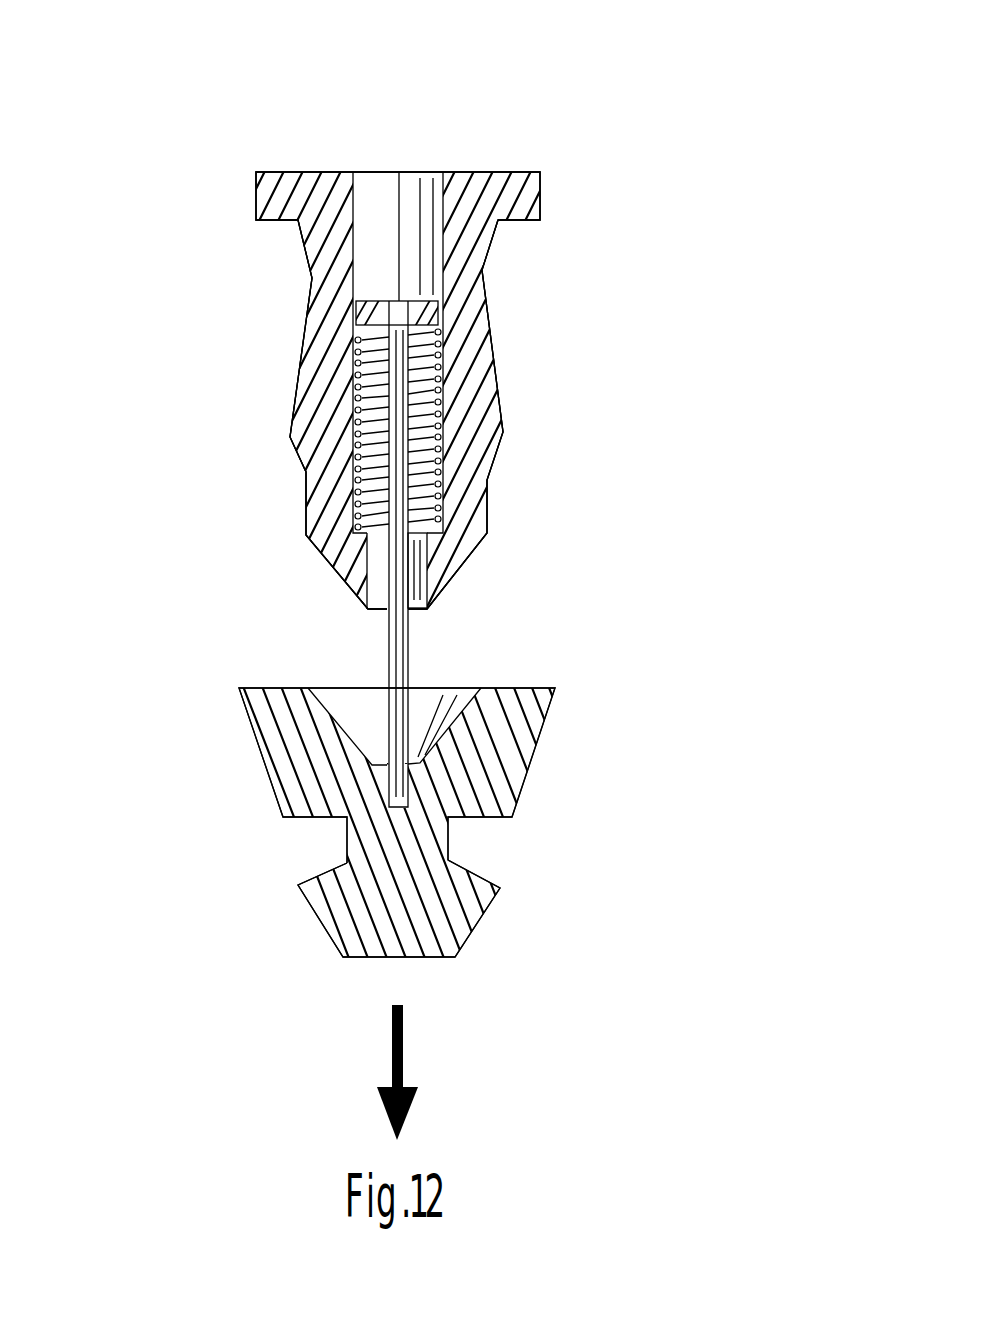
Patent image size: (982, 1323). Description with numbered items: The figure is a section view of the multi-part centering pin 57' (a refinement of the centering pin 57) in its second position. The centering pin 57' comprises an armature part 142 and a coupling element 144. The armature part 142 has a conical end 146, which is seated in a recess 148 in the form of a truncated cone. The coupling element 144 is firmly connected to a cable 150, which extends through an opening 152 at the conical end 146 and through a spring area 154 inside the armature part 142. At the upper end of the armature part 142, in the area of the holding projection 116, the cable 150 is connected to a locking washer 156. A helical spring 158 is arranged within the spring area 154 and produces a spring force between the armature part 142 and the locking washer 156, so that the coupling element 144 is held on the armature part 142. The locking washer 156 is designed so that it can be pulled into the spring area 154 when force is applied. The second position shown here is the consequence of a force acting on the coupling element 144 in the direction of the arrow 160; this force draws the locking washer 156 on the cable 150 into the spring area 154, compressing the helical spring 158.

The centering pin 57 is at (319, 307).
The centering pin 57' is at (530, 564).
The holding projection 116 is at (540, 188).
The armature part 142 is at (505, 416).
The spring area 154 is at (373, 218).
The locking washer 156 is at (378, 316).
The helical spring 158 is at (432, 518).
The opening 152 is at (378, 603).
The conical end 146 is at (455, 573).
The cable 150 is at (410, 665).
The recess 148 is at (325, 703).
The coupling element 144 is at (480, 918).
The arrow 160 is at (403, 1057).